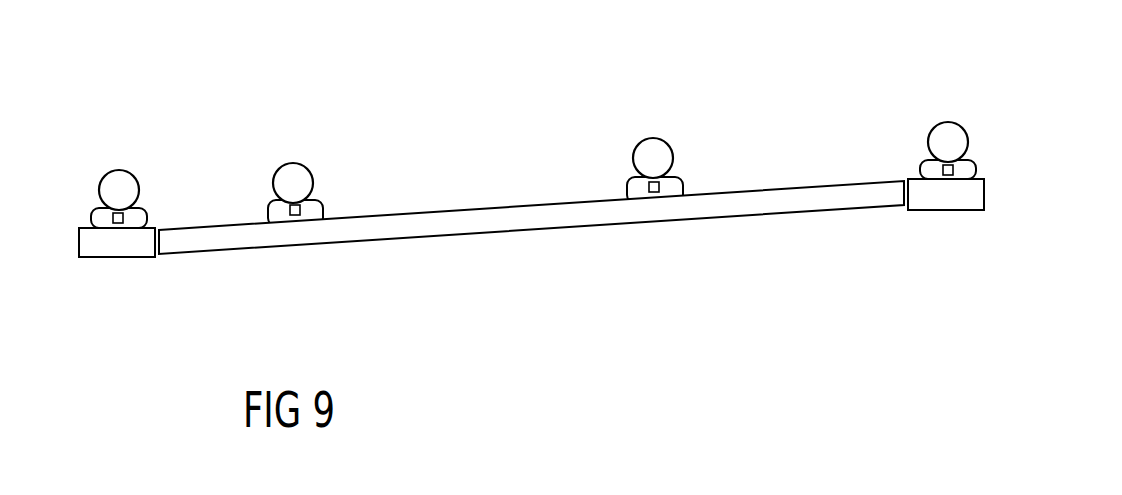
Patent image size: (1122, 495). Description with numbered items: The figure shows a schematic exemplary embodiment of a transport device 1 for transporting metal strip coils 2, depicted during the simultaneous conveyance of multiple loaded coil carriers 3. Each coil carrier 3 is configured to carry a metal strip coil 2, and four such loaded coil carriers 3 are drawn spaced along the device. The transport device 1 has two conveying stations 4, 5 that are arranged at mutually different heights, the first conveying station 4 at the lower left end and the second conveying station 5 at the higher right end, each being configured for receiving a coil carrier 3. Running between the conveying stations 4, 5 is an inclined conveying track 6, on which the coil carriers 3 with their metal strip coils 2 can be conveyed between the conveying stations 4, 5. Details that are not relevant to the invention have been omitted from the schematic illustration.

The transport device 1 is at (478, 120).
The metal strip coil 2 is at (115, 171).
The coil carrier 3 is at (144, 207).
The conveying station 4 is at (136, 248).
The conveying station 5 is at (952, 202).
The conveying track 6 is at (546, 222).